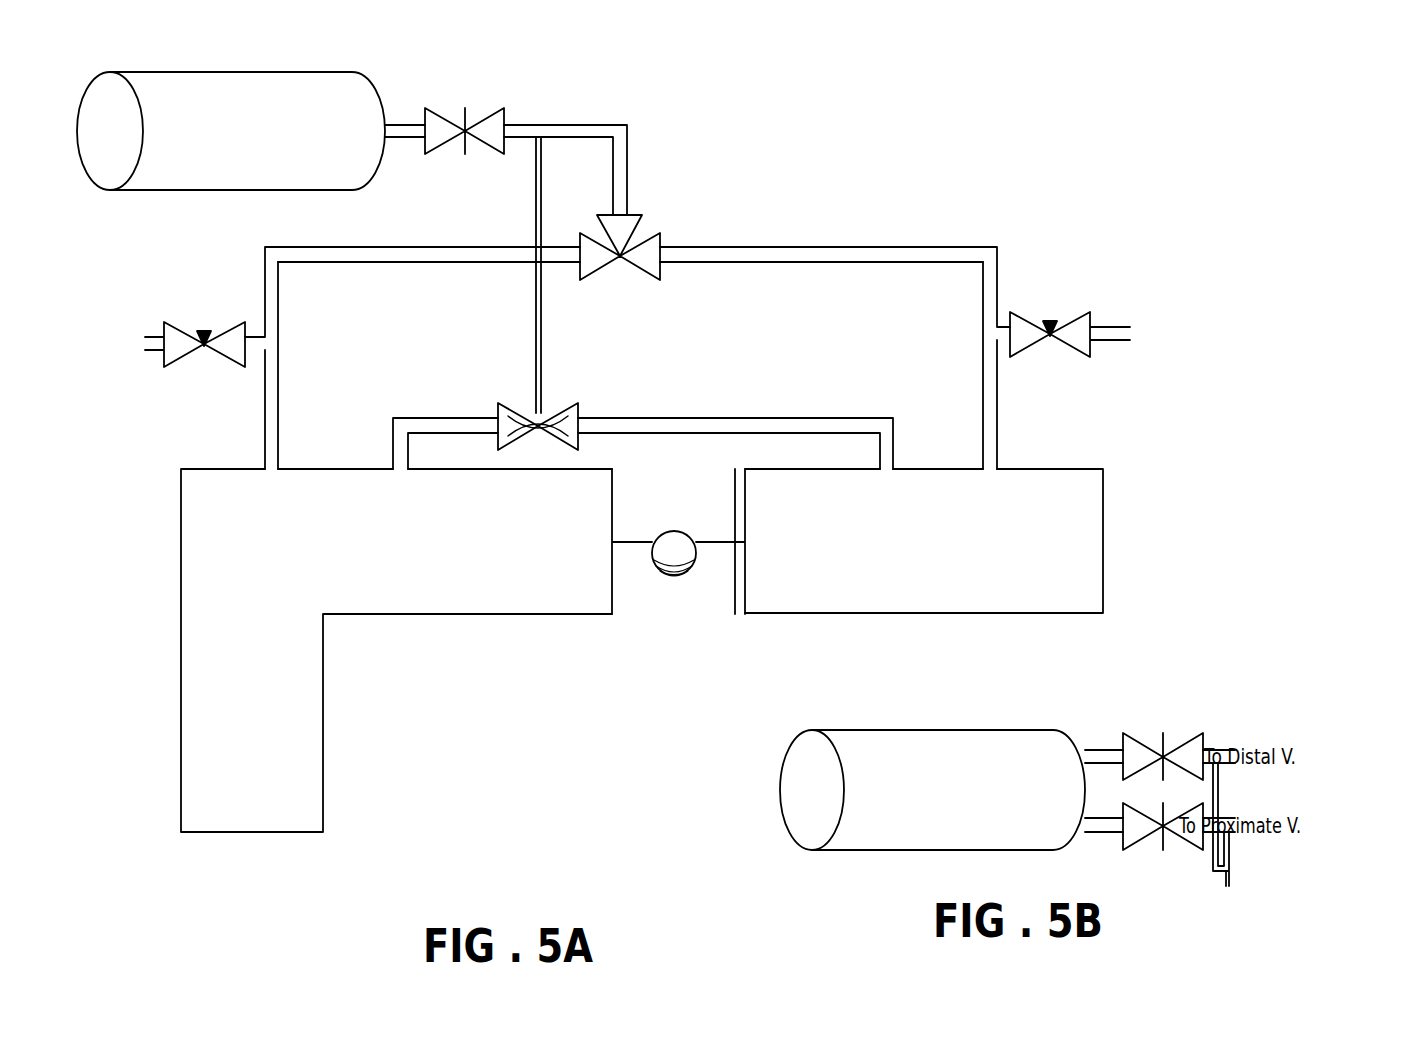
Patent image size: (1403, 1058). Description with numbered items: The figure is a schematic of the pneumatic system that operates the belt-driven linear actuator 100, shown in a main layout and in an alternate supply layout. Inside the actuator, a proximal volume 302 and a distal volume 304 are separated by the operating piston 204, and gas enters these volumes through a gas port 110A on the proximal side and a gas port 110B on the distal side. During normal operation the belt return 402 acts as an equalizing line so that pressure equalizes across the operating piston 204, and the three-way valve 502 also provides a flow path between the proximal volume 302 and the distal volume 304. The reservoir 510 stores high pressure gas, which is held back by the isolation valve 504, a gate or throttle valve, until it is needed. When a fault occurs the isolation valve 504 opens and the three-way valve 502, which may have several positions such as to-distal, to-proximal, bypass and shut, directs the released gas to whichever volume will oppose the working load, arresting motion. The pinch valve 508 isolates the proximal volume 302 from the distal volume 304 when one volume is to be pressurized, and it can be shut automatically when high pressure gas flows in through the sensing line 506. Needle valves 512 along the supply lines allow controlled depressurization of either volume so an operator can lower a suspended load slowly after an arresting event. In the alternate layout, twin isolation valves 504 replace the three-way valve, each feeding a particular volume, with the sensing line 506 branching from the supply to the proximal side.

In FIG. 5A, the belt-driven linear actuator 100 is at (1216, 185).
In FIG. 5A, the gas port 110A is at (275, 467).
In FIG. 5A, the gas port 110B is at (990, 468).
In FIG. 5A, the operating piston 204 is at (686, 592).
In FIG. 5A, the proximal volume 302 is at (381, 573).
In FIG. 5A, the distal volume 304 is at (907, 568).
In FIG. 5A, the belt return 402 is at (868, 432).
In FIG. 5A, the three-way valve 502 is at (642, 224).
In FIG. 5A, the isolation valve 504 is at (497, 121).
In FIG. 5B, the isolation valve 504 is at (1130, 814).
In FIG. 5A, the sensing line 506 is at (535, 323).
In FIG. 5B, the sensing line 506 is at (1231, 874).
In FIG. 5A, the pinch valve 508 is at (575, 413).
In FIG. 5A, the reservoir 510 is at (273, 165).
In FIG. 5B, the reservoir 510 is at (978, 823).
In FIG. 5A, the needle valve 512 is at (1085, 285).